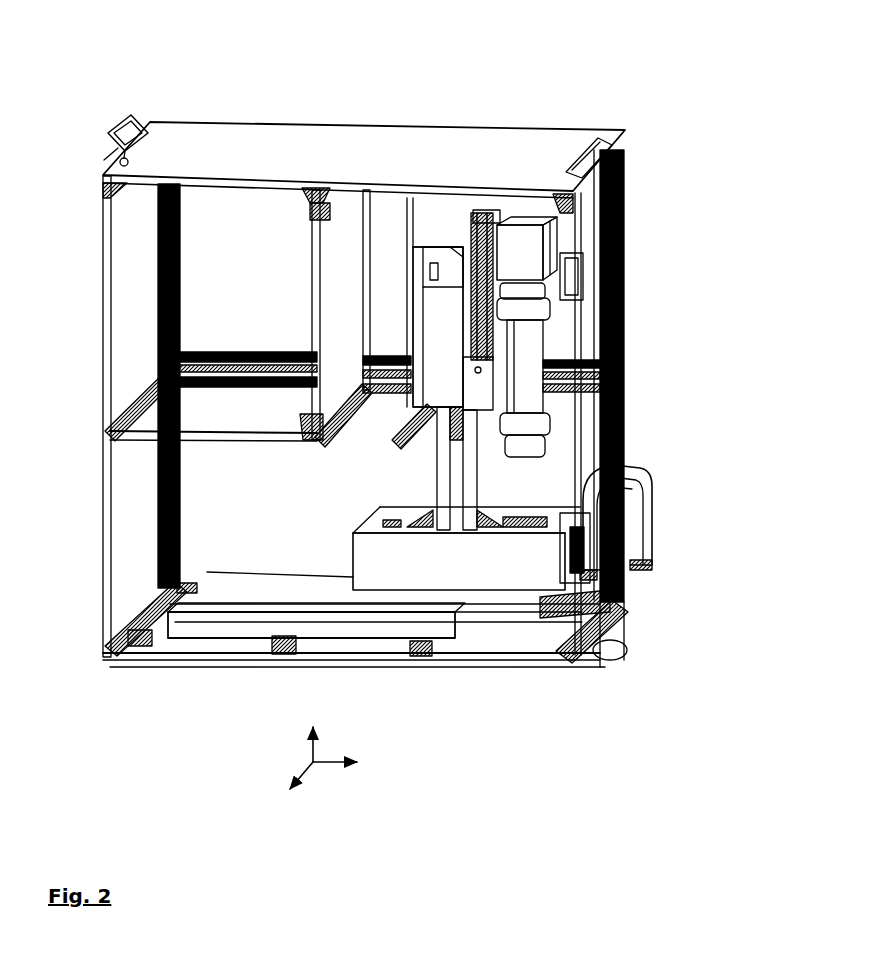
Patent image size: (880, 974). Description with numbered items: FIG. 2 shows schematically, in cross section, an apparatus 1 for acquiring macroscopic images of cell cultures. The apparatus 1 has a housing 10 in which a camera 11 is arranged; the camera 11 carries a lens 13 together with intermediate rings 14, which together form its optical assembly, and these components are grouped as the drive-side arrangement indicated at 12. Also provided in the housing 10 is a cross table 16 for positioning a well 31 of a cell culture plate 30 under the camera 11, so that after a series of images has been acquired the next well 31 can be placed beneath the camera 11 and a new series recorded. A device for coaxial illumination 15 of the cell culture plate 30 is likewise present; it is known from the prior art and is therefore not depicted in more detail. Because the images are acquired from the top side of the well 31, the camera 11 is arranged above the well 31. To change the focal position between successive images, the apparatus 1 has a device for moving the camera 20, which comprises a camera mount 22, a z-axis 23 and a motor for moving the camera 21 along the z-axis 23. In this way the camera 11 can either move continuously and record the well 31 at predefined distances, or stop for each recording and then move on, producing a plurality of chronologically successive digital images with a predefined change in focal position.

The apparatus 1 is at (206, 97).
The housing 10 is at (543, 150).
The camera 11 is at (562, 246).
The drive train 12 is at (688, 258).
The lens 13 is at (550, 303).
The intermediate rings 14 is at (549, 357).
The device for coaxial illumination 15 is at (519, 559).
The cross table 16 is at (455, 636).
The device for moving the camera 20 is at (500, 80).
The motor for moving the camera 21 is at (422, 270).
The camera mount 22 is at (488, 245).
The z-axis 23 is at (438, 327).
The cell culture plate 30 is at (547, 600).
The well 31 is at (579, 592).